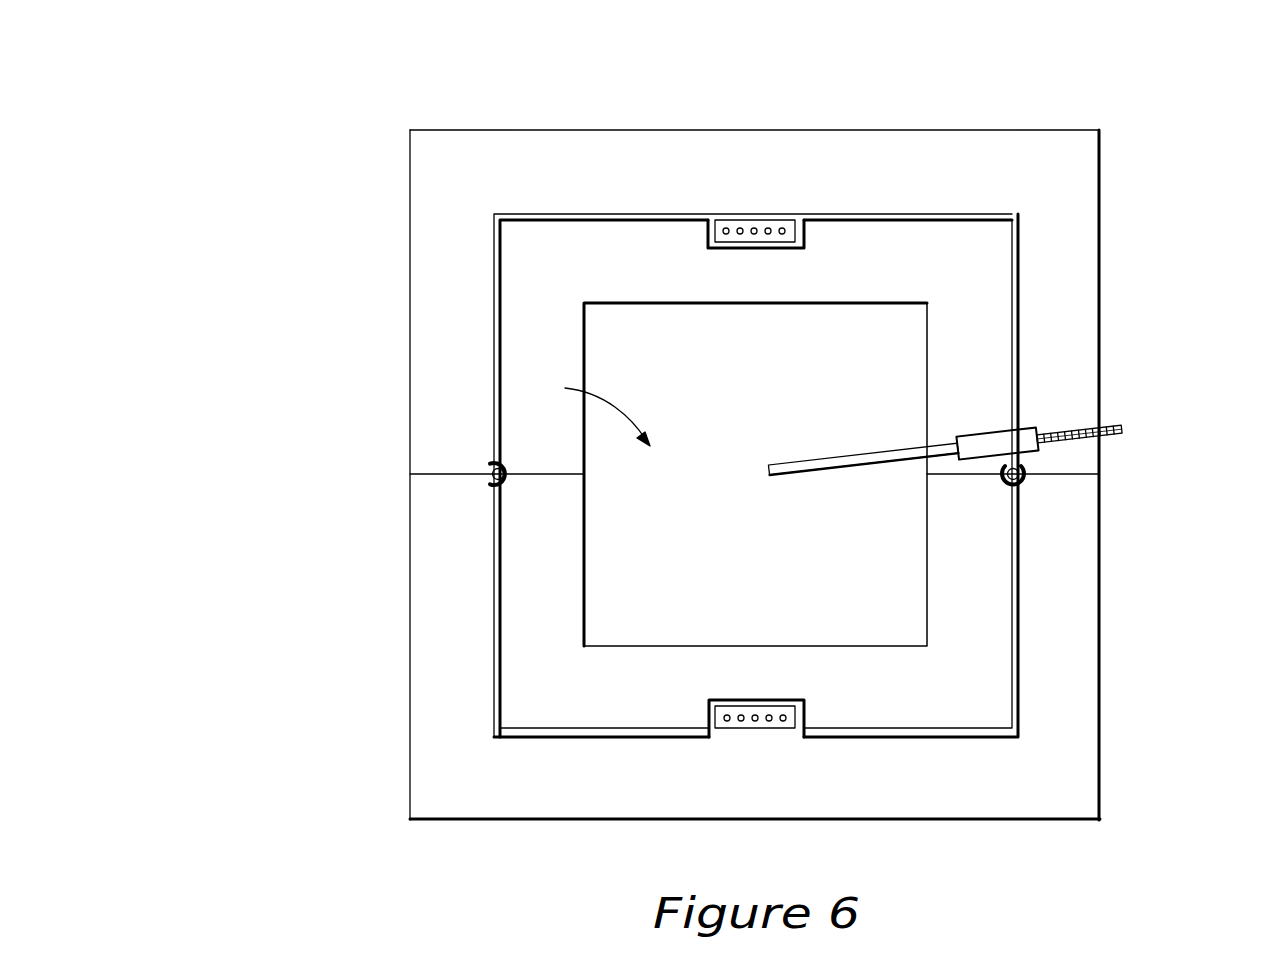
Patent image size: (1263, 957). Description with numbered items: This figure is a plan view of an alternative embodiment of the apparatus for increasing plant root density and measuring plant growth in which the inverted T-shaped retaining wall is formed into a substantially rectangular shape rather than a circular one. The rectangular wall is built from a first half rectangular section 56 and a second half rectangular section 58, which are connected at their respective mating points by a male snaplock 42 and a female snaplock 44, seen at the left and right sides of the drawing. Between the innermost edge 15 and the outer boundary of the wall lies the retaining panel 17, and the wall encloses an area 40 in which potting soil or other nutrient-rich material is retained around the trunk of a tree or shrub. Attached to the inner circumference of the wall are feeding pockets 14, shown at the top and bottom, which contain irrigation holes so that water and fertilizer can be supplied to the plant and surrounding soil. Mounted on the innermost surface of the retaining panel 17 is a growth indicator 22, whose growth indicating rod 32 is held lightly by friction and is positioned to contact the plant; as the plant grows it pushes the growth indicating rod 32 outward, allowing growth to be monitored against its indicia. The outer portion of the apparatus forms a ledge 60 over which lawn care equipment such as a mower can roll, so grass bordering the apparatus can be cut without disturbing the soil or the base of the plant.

The feeding pocket 14 is at (754, 228).
The innermost edge 15 is at (585, 577).
The retaining panel 17 is at (1020, 606).
The growth indicator 22 is at (975, 432).
The growth indicating rod 32 is at (1125, 433).
The area 40 is at (565, 388).
The male snaplock 42 is at (491, 471).
The female snaplock 44 is at (486, 466).
The first half rectangular section 56 is at (598, 163).
The second half rectangular section 58 is at (913, 784).
The ledge 60 is at (433, 538).